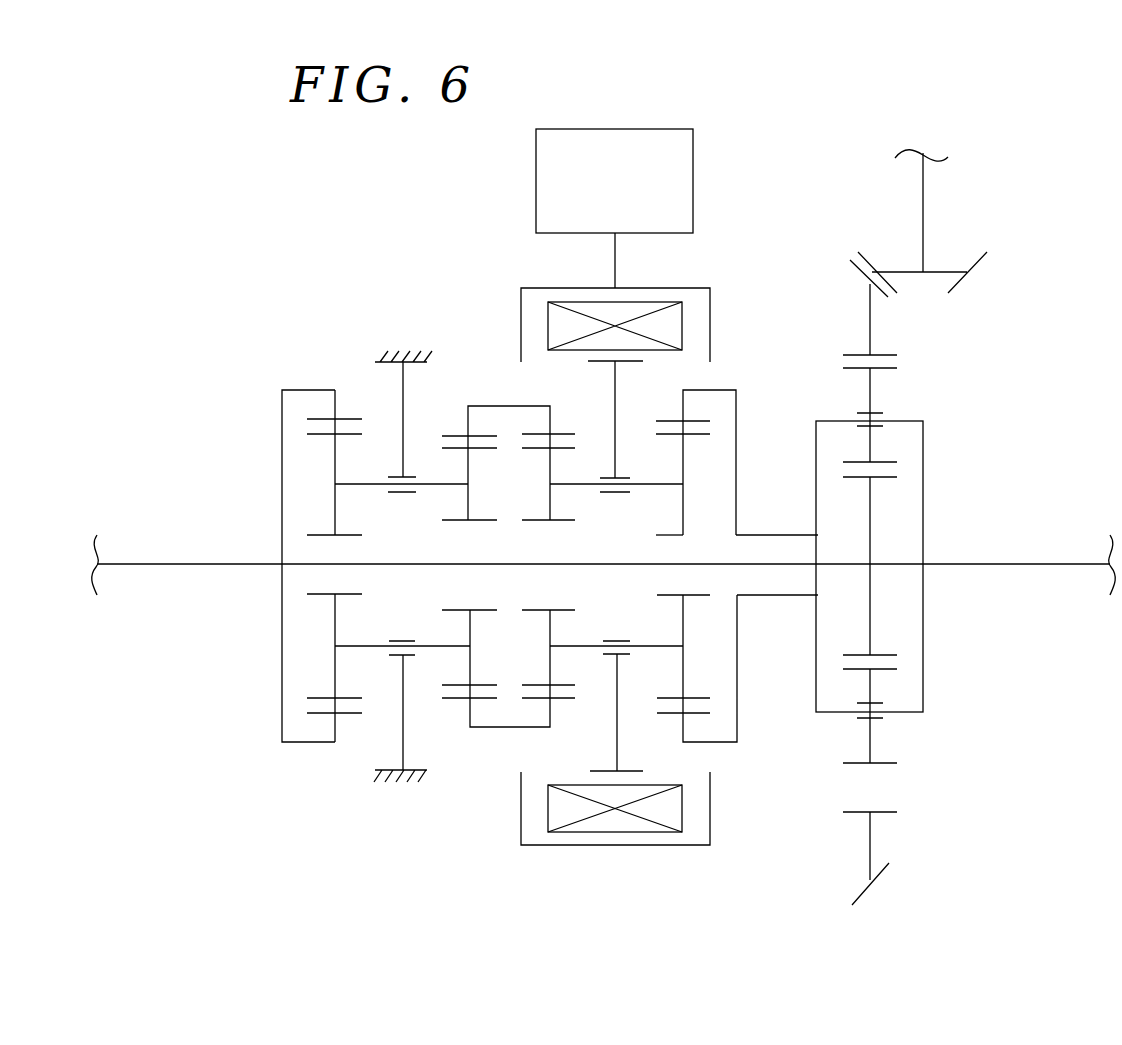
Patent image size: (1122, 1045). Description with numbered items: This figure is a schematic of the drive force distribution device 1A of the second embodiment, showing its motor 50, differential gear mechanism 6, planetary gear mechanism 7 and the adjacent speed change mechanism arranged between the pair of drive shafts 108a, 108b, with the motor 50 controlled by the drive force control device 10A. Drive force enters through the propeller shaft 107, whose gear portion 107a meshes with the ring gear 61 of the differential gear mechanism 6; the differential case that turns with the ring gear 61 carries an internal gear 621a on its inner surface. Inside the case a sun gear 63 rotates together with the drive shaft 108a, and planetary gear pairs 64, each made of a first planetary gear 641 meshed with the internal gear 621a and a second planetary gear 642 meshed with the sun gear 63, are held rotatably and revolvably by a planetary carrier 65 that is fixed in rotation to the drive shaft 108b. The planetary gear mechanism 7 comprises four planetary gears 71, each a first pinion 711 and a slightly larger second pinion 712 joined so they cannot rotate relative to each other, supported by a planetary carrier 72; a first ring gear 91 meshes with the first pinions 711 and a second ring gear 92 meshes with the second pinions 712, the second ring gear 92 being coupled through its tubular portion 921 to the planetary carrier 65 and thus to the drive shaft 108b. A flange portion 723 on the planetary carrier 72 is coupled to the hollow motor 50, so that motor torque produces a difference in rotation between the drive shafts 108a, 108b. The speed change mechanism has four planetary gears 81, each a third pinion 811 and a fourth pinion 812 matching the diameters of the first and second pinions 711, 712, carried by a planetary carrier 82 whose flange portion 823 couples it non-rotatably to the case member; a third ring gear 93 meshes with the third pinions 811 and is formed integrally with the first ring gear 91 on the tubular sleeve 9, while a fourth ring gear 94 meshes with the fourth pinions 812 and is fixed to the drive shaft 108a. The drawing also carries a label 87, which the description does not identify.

The drive force distribution device 1A is at (418, 280).
The drive force control device 10A is at (657, 127).
The motor 50 is at (660, 350).
The planetary gear mechanism 7 is at (570, 727).
The differential gear mechanism 6 is at (998, 356).
The sleeve 9 is at (483, 730).
The parking/brake mechanism 87 is at (427, 702).
The ring gear 61 is at (857, 272).
The sun gear 63 is at (877, 479).
The planetary gear pairs 64 is at (925, 586).
The first planetary gear 641 is at (889, 370).
The second planetary gear 642 is at (880, 765).
The planetary carrier 65 is at (817, 422).
The planetary gears 71 is at (662, 645).
The planetary carrier 72 is at (613, 637).
The planetary gears 81 is at (363, 645).
The planetary carrier 82 is at (408, 638).
The first ring gear 91 is at (568, 434).
The second ring gear 92 is at (675, 418).
The third ring gear 93 is at (455, 432).
The fourth ring gear 94 is at (342, 419).
The propeller shaft 107 is at (923, 205).
The gear portion 107a is at (875, 237).
The drive shaft 108a is at (179, 562).
The drive shaft 108b is at (1002, 562).
The internal gear 621a is at (883, 352).
The first pinion 711 is at (537, 520).
The second pinion 712 is at (665, 523).
The flange portion 723 is at (618, 765).
The third pinion 811 is at (455, 522).
The fourth pinion 812 is at (322, 532).
The flange portion 823 is at (403, 742).
The tubular portion 921 is at (783, 533).